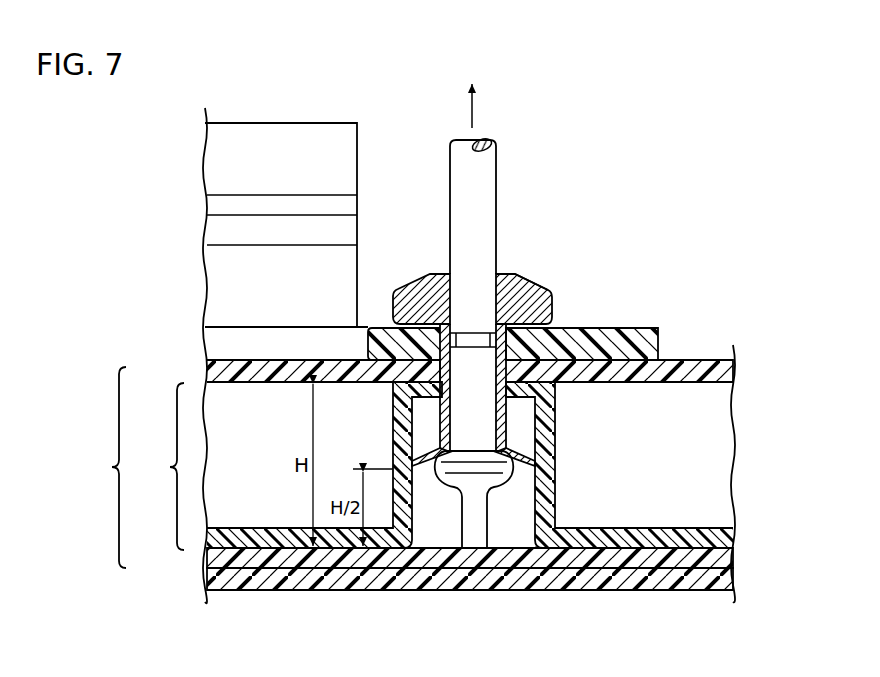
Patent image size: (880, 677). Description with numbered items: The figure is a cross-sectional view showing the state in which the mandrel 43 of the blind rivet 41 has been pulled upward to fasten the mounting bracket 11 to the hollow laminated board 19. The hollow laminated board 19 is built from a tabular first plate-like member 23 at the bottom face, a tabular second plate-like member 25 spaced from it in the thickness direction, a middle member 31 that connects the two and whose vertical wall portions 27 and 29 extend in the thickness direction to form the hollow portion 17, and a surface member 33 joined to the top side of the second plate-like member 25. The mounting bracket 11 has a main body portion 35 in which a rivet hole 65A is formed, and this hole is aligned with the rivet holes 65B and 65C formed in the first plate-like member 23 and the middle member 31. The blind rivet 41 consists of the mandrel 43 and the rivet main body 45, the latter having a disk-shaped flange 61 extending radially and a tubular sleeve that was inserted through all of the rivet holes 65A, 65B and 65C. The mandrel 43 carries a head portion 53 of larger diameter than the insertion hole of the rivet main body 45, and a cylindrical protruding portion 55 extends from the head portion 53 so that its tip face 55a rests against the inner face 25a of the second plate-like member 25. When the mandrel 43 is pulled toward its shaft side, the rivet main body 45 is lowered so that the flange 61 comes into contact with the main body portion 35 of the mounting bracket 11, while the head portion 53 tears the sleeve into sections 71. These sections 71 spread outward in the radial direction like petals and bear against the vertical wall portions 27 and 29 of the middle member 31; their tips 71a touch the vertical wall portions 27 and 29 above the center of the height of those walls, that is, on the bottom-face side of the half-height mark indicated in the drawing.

The mounting bracket 11 is at (287, 148).
The hollow portion 17 is at (512, 528).
The hollow laminated board 19 is at (104, 467).
The first plate-like member 23 is at (690, 366).
The second plate-like member 25 is at (728, 558).
The inner face 25a is at (533, 542).
The vertical wall portion 27 is at (398, 420).
The vertical wall portion 29 is at (548, 513).
The middle member 31 is at (159, 466).
The surface member 33 is at (728, 583).
The main body portion 35 is at (395, 332).
The blind rivet 41 is at (498, 263).
The mandrel 43 is at (462, 152).
The rivet main body 45 is at (550, 288).
The head portion 53 is at (557, 491).
The protruding portion 55 is at (464, 522).
The tip face 55a is at (463, 549).
The flange 61 is at (522, 288).
The rivet hole 65A is at (497, 317).
The rivet hole 65B is at (502, 386).
The rivet hole 65C is at (504, 408).
The sections 71 is at (516, 457).
The tips 71a is at (498, 468).